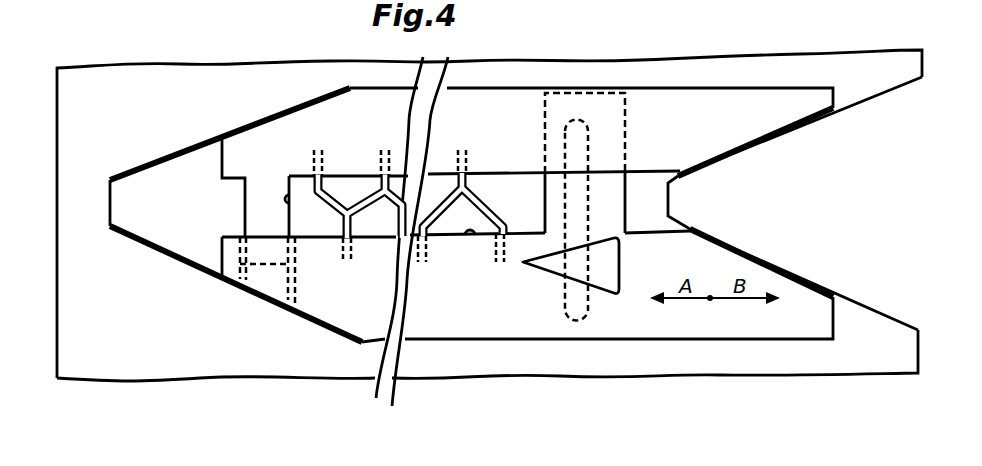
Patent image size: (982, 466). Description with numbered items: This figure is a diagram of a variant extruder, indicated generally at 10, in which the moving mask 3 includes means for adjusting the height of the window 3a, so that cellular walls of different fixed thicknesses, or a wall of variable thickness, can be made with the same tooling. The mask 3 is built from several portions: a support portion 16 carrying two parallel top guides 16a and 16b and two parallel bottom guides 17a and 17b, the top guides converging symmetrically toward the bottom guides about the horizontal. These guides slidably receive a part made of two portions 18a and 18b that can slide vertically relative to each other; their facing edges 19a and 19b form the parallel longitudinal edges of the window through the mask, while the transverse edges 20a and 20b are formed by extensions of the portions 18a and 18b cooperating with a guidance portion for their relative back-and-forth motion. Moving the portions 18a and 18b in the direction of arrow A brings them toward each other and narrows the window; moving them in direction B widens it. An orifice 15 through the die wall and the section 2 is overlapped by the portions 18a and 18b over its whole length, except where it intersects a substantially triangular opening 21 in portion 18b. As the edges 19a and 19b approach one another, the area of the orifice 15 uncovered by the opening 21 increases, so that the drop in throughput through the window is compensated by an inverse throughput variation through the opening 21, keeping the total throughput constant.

The section 2 is at (335, 214).
The mask 3 is at (704, 376).
The window 3a is at (382, 214).
The thermal head 10 is at (614, 0).
The orifice 15 is at (588, 193).
The support portion 16 is at (126, 338).
The top guide 16a is at (180, 147).
The top guide 16b is at (863, 103).
The bottom guide 17a is at (185, 263).
The bottom guide 17b is at (828, 296).
The portion 18a is at (733, 101).
The portion 18b is at (467, 331).
The facing edge 19a is at (484, 173).
The facing edge 19b is at (470, 240).
The transverse edge 20a is at (543, 198).
The transverse edge 20b is at (288, 203).
The opening 21 is at (622, 262).